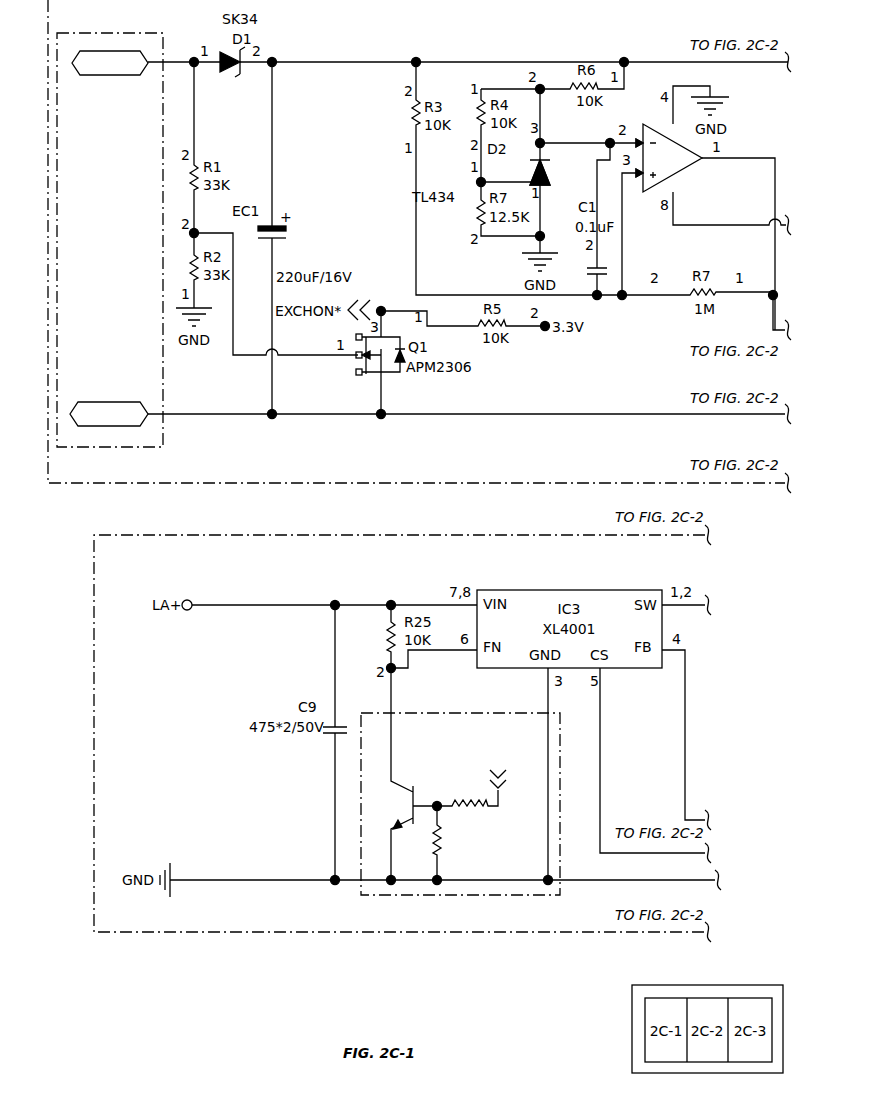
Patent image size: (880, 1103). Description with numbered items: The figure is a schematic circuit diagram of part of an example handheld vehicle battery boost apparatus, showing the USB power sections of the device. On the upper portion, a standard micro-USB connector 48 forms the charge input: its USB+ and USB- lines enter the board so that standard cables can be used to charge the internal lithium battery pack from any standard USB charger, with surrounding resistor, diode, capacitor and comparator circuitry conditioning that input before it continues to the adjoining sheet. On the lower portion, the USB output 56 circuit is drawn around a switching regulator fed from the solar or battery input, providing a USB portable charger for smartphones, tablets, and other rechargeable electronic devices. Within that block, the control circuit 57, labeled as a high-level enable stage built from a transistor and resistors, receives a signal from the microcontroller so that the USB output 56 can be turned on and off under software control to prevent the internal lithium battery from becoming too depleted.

The micro-USB connector 48 is at (163, 33).
The USB output 56 is at (94, 600).
The control circuit 57 is at (563, 893).